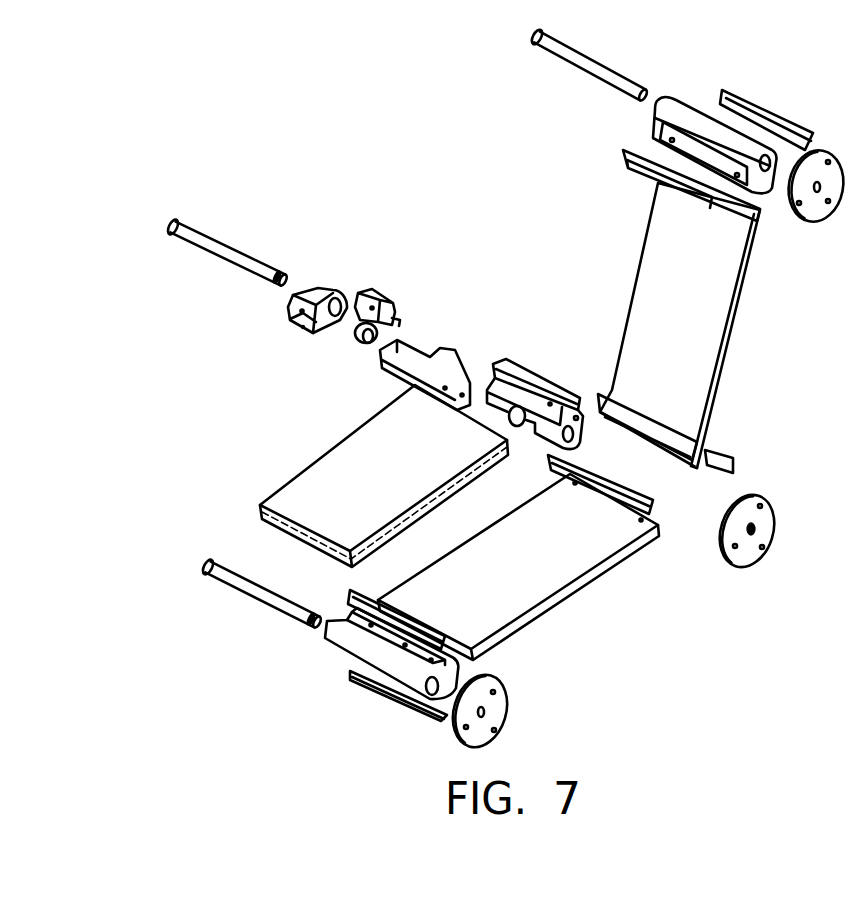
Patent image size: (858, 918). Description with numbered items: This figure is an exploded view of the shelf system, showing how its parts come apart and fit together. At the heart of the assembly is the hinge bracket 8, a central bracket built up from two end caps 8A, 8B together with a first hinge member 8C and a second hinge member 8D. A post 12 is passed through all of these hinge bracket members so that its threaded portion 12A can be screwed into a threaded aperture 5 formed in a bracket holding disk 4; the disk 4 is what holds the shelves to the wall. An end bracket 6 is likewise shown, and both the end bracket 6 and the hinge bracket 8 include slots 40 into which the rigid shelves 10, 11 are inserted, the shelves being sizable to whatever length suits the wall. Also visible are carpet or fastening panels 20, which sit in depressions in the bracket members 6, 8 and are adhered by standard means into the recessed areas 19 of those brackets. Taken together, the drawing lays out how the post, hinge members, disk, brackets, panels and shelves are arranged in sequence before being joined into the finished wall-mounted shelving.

The bracket holding disk 4 is at (762, 505).
The threaded aperture 5 is at (753, 529).
The end bracket 6 is at (335, 634).
The hinge bracket 8 is at (600, 235).
The end cap 8A is at (322, 275).
The end cap 8B is at (383, 283).
The first hinge member 8C is at (438, 335).
The second hinge member 8D is at (520, 360).
The shelf 10 is at (560, 573).
The shelf 11 is at (722, 322).
The post 12 is at (212, 232).
The threaded portion 12A is at (290, 286).
The recessed area 19 is at (410, 650).
The fastening panel 20 is at (348, 470).
The slot 40 is at (383, 367).